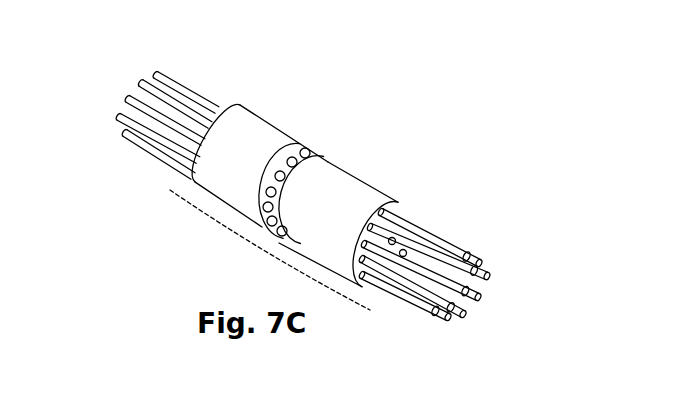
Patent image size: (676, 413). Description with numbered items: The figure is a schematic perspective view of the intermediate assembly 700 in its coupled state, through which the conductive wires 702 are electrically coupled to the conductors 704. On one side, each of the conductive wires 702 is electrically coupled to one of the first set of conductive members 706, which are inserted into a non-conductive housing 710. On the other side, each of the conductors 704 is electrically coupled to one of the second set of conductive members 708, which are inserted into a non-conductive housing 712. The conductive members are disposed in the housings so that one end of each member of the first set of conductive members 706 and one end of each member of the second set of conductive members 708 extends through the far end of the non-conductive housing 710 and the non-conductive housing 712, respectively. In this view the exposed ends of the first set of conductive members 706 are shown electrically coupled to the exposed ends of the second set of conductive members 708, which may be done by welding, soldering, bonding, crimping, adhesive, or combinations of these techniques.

The intermediate assembly 700 is at (262, 252).
The conductive wires 702 is at (207, 66).
The conductors 704 is at (473, 219).
The first set of conductive members 706 is at (330, 136).
The second set of conductive members 708 is at (346, 136).
The non-conductive housing 710 is at (252, 127).
The non-conductive housing 712 is at (376, 194).